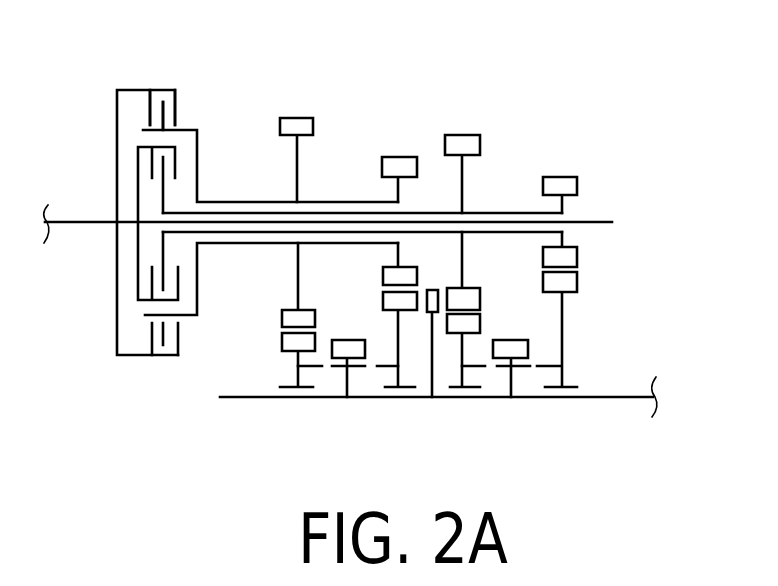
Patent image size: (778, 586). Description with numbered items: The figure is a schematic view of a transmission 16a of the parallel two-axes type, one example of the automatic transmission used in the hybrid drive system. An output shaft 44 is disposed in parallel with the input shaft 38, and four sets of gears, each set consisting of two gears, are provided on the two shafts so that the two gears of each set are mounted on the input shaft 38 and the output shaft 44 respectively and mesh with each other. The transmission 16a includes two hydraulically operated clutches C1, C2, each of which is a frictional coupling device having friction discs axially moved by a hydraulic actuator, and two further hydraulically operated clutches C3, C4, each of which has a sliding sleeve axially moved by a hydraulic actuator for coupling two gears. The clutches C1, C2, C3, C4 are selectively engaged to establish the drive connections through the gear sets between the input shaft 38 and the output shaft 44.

The transmission 16a is at (513, 118).
The input shaft 38 is at (89, 220).
The output shaft 44 is at (607, 398).
The hydraulically operated clutch C1 is at (176, 107).
The hydraulically operated clutch C2 is at (152, 284).
The hydraulically operated clutch C3 is at (343, 350).
The hydraulically operated clutch C4 is at (507, 352).